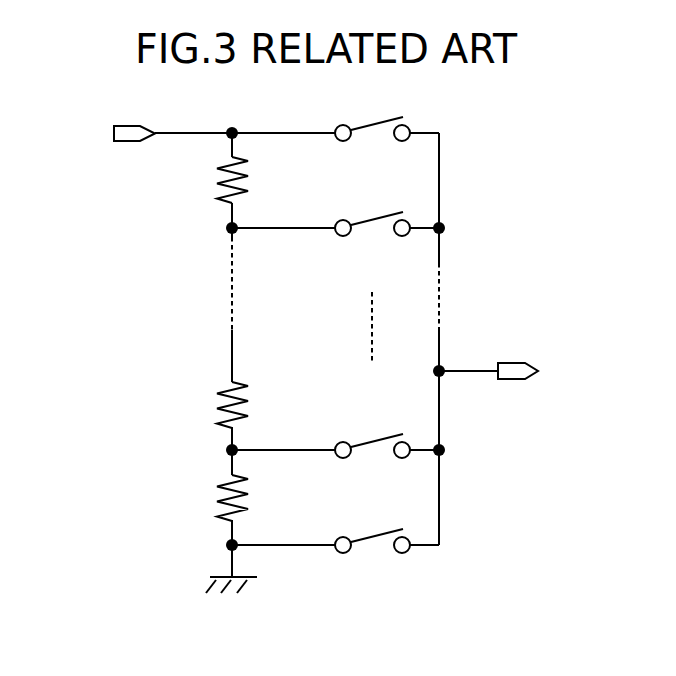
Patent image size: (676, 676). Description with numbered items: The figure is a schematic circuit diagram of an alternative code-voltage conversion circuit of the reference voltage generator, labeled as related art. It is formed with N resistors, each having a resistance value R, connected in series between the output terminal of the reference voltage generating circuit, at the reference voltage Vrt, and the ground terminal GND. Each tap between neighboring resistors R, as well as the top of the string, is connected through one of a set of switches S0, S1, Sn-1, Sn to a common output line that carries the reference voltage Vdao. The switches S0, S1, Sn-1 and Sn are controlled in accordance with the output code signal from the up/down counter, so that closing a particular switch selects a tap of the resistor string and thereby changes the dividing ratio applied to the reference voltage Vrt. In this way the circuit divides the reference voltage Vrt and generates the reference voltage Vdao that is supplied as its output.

The switch Sn is at (372, 117).
The switch Sn-1 is at (372, 211).
The switch S1 is at (372, 434).
The switch S0 is at (372, 529).
The resistance value R is at (221, 339).
The reference voltage Vrt is at (106, 135).
The reference voltage Vdao is at (556, 373).
The ground terminal GND is at (229, 602).